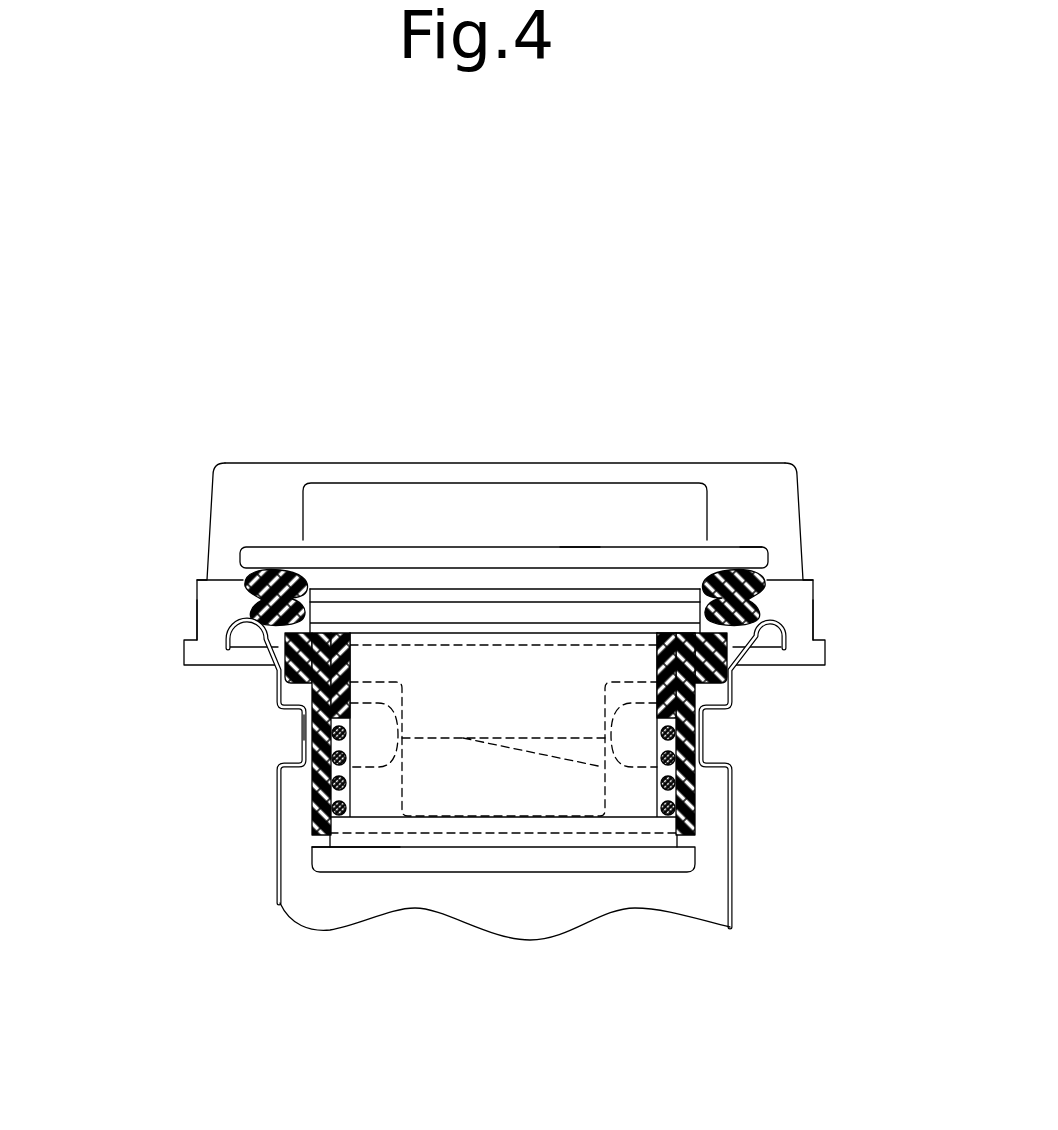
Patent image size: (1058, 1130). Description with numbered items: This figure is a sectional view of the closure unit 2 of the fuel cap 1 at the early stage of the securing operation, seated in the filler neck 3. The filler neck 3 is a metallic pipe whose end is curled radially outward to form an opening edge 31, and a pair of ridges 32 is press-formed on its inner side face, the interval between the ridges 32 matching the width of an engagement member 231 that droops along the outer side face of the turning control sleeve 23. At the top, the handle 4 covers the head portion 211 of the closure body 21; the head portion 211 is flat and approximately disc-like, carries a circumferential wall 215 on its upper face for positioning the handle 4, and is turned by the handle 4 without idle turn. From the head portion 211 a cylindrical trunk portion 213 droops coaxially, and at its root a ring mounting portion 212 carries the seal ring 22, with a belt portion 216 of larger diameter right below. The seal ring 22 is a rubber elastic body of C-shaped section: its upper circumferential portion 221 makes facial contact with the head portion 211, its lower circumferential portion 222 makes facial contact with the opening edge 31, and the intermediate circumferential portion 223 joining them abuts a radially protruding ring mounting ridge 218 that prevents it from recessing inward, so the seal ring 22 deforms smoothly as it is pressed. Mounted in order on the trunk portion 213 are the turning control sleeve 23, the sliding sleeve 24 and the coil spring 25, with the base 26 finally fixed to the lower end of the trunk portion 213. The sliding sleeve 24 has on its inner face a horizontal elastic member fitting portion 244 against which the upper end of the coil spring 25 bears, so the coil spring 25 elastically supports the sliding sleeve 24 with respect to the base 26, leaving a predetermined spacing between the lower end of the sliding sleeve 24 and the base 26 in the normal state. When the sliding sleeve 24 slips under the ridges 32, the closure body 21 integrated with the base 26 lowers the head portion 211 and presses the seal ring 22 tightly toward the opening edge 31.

The fuel cap 1 is at (505, 448).
The closure unit 2 is at (637, 857).
The filler neck 3 is at (553, 897).
The handle 4 is at (552, 462).
The closure body 21 is at (330, 555).
The head portion 211 is at (580, 545).
The ring mounting portion 212 is at (455, 582).
The trunk portion 213 is at (587, 680).
The circumferential wall 215 is at (378, 512).
The belt portion 216 is at (668, 637).
The ring mounting ridge 218 is at (348, 595).
The seal ring 22 is at (280, 593).
The upper circumferential portion 221 is at (755, 572).
The lower circumferential portion 222 is at (762, 618).
The intermediate circumferential portion 223 is at (728, 597).
The turning control sleeve 23 is at (283, 671).
The engagement member 231 is at (605, 697).
The sliding sleeve 24 is at (695, 793).
The elastic member fitting portion 244 is at (302, 714).
The coil spring 25 is at (325, 768).
The base 26 is at (365, 857).
The opening edge 31 is at (205, 615).
The ridge 32 is at (303, 745).